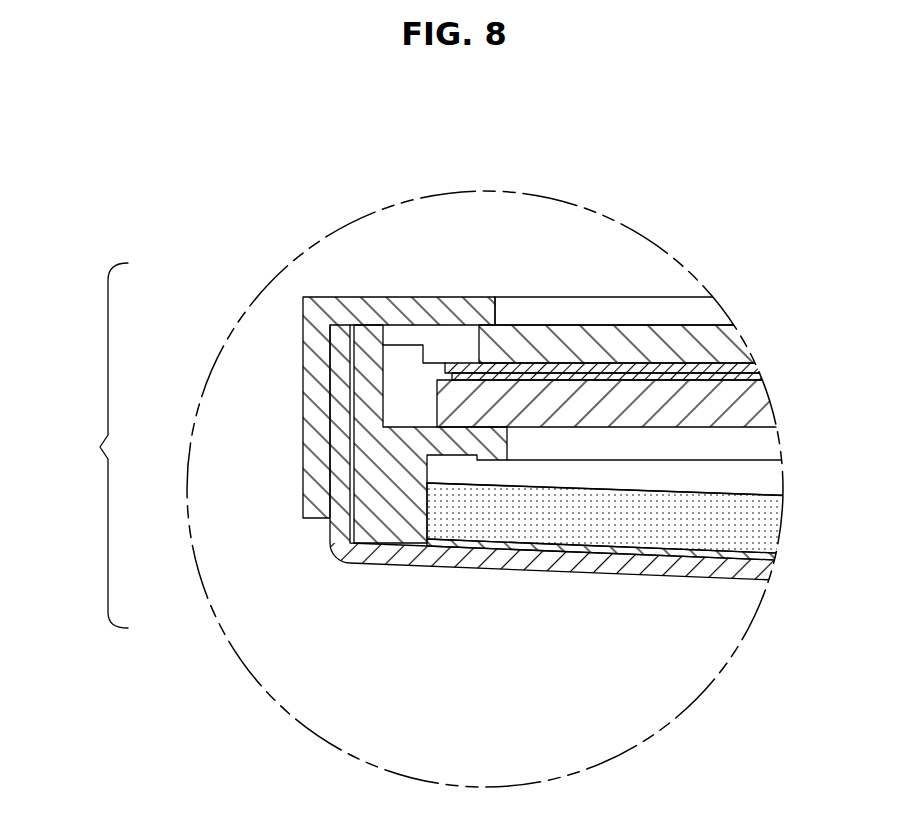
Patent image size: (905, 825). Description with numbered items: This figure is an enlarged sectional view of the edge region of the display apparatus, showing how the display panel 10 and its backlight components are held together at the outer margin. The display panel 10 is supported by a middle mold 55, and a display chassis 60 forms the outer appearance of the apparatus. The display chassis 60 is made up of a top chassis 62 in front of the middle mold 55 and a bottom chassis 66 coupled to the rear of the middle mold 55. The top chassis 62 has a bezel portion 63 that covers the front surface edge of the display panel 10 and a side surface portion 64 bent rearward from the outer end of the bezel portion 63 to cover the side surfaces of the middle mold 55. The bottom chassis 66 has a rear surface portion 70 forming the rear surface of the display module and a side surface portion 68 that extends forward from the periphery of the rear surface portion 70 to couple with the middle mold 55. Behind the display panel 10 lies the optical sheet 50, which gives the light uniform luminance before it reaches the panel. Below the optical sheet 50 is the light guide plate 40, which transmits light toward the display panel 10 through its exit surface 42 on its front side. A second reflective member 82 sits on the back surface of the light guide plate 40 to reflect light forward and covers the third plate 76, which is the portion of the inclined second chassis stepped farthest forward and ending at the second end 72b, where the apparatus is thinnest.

The display panel 10 is at (673, 323).
The light guide plate 40 is at (618, 510).
The exit surface 42 is at (722, 493).
The optical sheet 50 is at (783, 363).
The middle mold 55 is at (382, 478).
The display chassis 60 is at (92, 445).
The top chassis 62 is at (335, 298).
The bezel portion 63 is at (428, 305).
The side surface portion 64 is at (303, 368).
The bottom chassis 66 is at (341, 562).
The side surface portion 68 is at (341, 443).
The rear surface portion 70 is at (468, 568).
The second end 72b is at (342, 547).
The third plate 76 is at (530, 568).
The second reflective member 82 is at (587, 558).